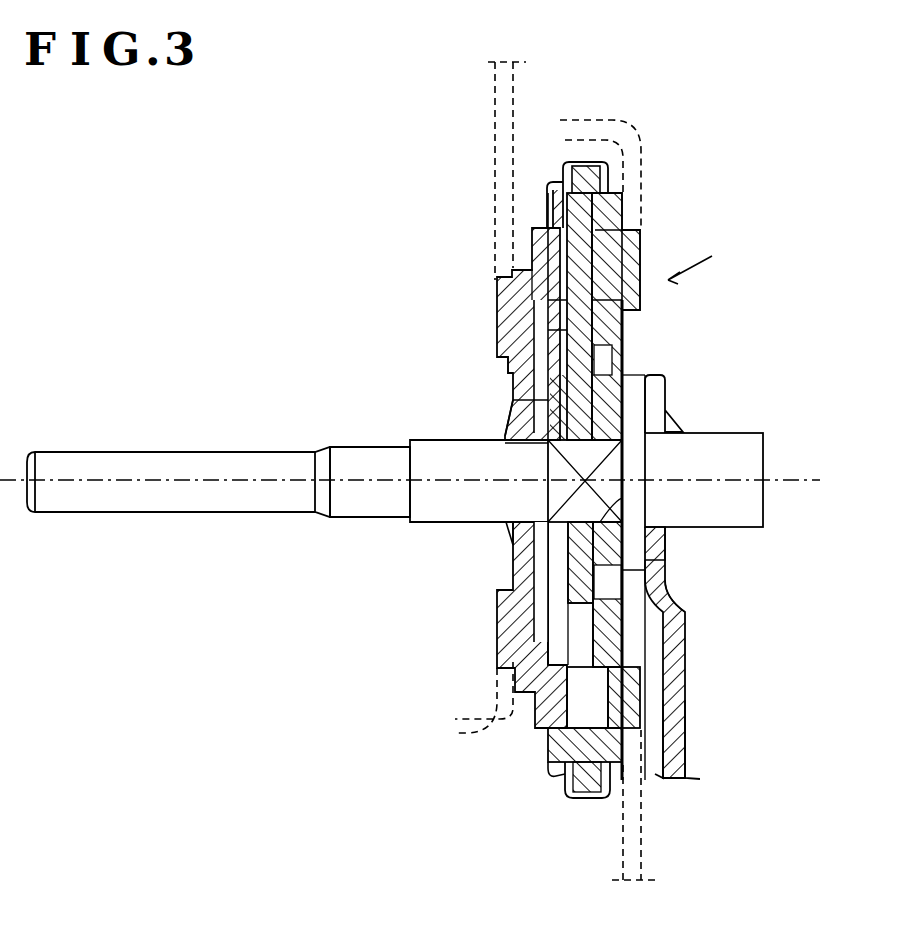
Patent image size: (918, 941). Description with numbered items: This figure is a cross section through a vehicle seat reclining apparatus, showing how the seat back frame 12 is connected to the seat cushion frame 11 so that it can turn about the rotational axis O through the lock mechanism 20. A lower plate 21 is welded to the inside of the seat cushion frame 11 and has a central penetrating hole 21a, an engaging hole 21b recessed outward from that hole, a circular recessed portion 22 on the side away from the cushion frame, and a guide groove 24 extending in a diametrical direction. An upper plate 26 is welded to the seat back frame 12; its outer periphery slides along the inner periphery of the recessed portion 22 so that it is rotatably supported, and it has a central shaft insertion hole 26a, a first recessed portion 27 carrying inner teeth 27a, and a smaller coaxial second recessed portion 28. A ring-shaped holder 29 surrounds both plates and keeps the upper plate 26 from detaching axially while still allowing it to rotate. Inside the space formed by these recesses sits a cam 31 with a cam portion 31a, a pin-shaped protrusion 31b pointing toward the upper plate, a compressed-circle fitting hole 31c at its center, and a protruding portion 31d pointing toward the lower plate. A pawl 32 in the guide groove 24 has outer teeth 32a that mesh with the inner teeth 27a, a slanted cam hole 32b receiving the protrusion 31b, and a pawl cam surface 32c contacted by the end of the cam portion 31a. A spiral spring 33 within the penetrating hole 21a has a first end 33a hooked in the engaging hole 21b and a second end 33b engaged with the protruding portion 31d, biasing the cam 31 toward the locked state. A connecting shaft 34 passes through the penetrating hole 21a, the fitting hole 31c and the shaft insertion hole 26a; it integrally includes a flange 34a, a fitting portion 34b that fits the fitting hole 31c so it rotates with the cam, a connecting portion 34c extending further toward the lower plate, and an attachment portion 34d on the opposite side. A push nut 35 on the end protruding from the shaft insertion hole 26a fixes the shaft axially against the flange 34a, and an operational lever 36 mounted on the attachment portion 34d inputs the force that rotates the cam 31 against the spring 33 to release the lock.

The rotational axis O is at (790, 476).
The seat cushion frame 11 is at (643, 850).
The seat back frame 12 is at (495, 122).
The lock mechanism 20 is at (698, 253).
The lower plate 21 is at (676, 336).
The penetrating hole 21a is at (626, 346).
The engaging hole 21b is at (626, 636).
The recessed portion 22 is at (588, 800).
The guide groove 24 is at (600, 248).
The upper plate 26 is at (497, 360).
The shaft insertion hole 26a is at (527, 447).
The first recessed portion 27 is at (578, 728).
The inner teeth 27a is at (553, 212).
The second recessed portion 28 is at (562, 690).
The holder 29 is at (556, 782).
The cam 31 is at (516, 572).
The cam portion 31a is at (638, 296).
The protrusion 31b is at (560, 332).
The fitting hole 31c is at (636, 500).
The protruding portion 31d is at (626, 378).
The pawl 32 is at (545, 275).
The outer teeth 32a is at (577, 216).
The cam hole 32b is at (537, 390).
The pawl cam surface 32c is at (530, 302).
The spring 33 is at (626, 591).
The first end 33a is at (607, 626).
The second end 33b is at (637, 418).
The connecting shaft 34 is at (334, 447).
The flange 34a is at (660, 560).
The fitting portion 34b is at (634, 452).
The connecting portion 34c is at (378, 447).
The attachment portion 34d is at (748, 434).
The push nut 35 is at (504, 538).
The operational lever 36 is at (690, 676).